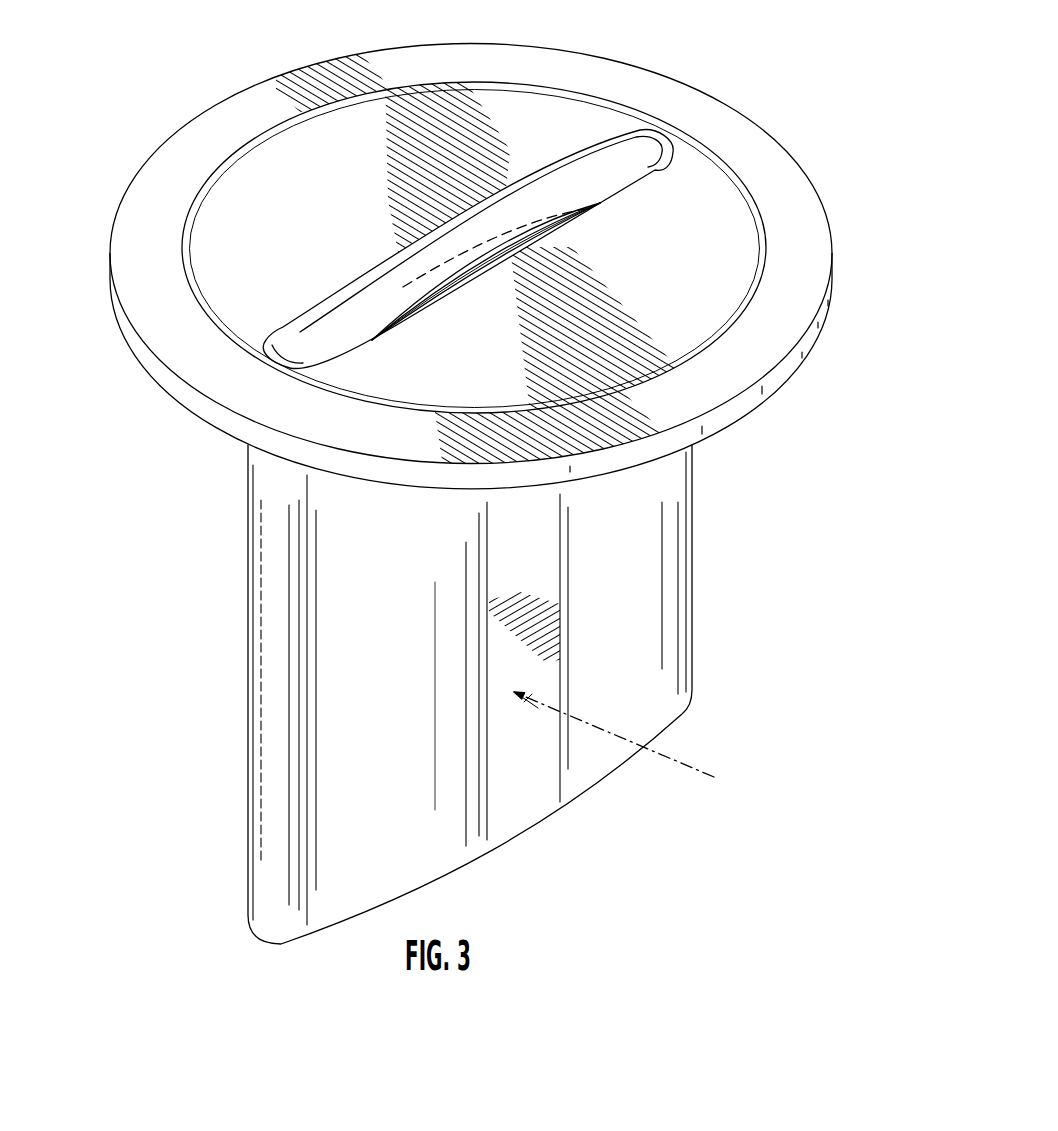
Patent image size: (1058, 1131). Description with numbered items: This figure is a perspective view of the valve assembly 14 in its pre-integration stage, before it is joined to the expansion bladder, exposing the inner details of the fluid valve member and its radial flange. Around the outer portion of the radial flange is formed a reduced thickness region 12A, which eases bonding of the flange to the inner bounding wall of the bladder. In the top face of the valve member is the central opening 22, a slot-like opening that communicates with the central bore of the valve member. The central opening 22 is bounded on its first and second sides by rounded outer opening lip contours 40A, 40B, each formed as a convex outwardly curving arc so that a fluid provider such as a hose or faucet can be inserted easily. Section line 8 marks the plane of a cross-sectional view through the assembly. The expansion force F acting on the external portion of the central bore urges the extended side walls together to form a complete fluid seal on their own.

The valve assembly 14 is at (141, 88).
The reduced thickness region 12A is at (116, 190).
The central opening 22 is at (305, 341).
The first side rounded outer opening lip contour 40A is at (598, 165).
The second side rounded outer opening lip contour 40B is at (612, 179).
The section line 8- 8 is at (733, 95).
The expansion force F is at (627, 745).